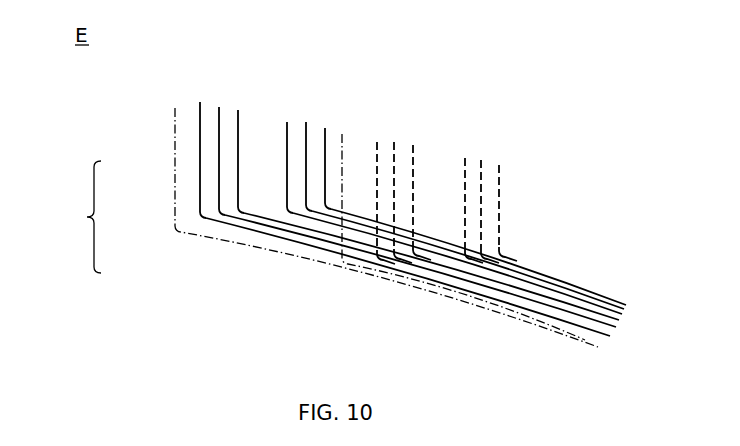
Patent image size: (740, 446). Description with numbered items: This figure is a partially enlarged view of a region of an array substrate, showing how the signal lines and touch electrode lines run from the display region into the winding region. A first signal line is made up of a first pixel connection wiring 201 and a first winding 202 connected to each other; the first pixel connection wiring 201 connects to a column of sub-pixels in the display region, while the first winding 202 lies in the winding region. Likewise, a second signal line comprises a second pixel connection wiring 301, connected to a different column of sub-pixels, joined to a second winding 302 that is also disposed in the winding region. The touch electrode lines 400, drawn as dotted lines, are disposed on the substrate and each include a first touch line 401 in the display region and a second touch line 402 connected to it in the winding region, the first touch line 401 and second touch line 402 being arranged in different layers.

The first pixel connection wiring 201 is at (194, 110).
The first winding 202 is at (420, 284).
The second pixel connection wiring 301 is at (370, 135).
The second winding 302 is at (546, 266).
The touch electrode lines 400 is at (325, 227).
The first touch line 401 is at (169, 173).
The second touch line 402 is at (200, 242).